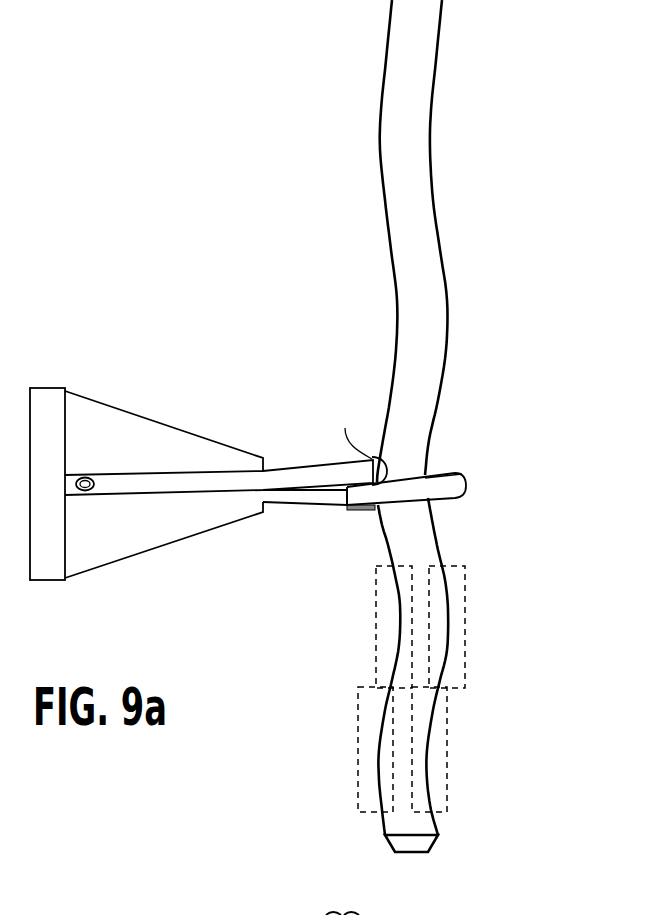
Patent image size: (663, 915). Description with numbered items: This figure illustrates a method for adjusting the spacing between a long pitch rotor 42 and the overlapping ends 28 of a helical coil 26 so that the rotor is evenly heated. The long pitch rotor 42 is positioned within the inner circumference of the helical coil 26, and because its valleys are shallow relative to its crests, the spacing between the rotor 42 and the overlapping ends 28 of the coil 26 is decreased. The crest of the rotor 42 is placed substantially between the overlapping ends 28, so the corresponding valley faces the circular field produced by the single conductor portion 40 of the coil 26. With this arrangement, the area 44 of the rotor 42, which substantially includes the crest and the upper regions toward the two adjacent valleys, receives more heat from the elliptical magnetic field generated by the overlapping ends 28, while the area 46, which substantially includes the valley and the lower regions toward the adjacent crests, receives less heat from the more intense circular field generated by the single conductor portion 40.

The helical coil 26 is at (173, 475).
The overlapping ends 28 is at (355, 508).
The single conductor portion 40 is at (465, 483).
The long pitch rotor 42 is at (407, 221).
The area of the rotor 44 is at (465, 608).
The area of the rotor 46 is at (376, 645).